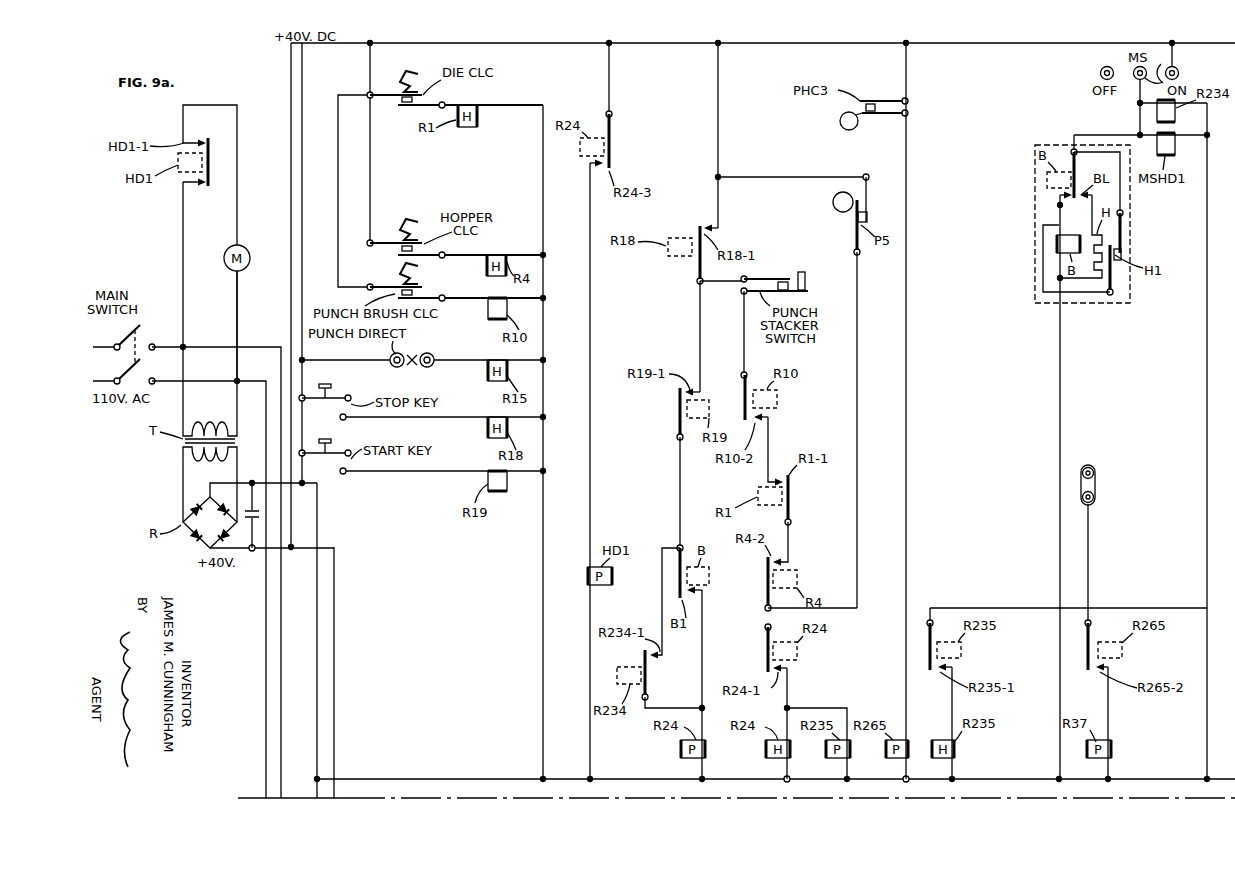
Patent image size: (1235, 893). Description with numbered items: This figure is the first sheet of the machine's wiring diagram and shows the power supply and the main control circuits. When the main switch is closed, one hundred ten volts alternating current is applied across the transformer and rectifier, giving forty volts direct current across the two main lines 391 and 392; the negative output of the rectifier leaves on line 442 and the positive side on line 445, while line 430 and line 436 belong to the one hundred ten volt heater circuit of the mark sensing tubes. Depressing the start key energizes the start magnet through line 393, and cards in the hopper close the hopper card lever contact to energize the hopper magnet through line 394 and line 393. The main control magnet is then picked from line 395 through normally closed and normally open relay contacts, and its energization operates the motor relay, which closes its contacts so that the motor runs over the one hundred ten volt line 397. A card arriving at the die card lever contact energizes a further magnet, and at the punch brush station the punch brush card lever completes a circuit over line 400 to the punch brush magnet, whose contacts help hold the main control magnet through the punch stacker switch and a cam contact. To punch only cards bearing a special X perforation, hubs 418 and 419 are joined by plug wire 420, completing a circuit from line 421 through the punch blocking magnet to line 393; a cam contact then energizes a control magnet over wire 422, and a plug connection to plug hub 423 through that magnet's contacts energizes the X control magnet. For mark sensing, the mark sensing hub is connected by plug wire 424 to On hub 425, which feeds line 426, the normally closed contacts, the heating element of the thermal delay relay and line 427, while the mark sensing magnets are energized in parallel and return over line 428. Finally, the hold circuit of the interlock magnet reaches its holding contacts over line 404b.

The main line 391 is at (431, 46).
The main line 392 is at (434, 781).
The line 393 is at (543, 548).
The line 394 is at (371, 192).
The line 395 is at (718, 104).
The 110 volt line 397 is at (232, 328).
The line 400 is at (338, 192).
The line 404b is at (1025, 609).
The hub 418 is at (391, 364).
The hub 419 is at (434, 356).
The plug wire 420 is at (414, 368).
The line 421 is at (302, 163).
The wire 422 is at (906, 382).
The plug hub 423 is at (1093, 470).
The plug wire 424 is at (1175, 55).
The On hub 425 is at (1180, 74).
The line 426 is at (1085, 135).
The line 427 is at (1060, 372).
The line 428 is at (1207, 462).
The line 430 is at (267, 632).
The line 436 is at (282, 677).
The line 442 is at (318, 516).
The line 445 is at (335, 682).